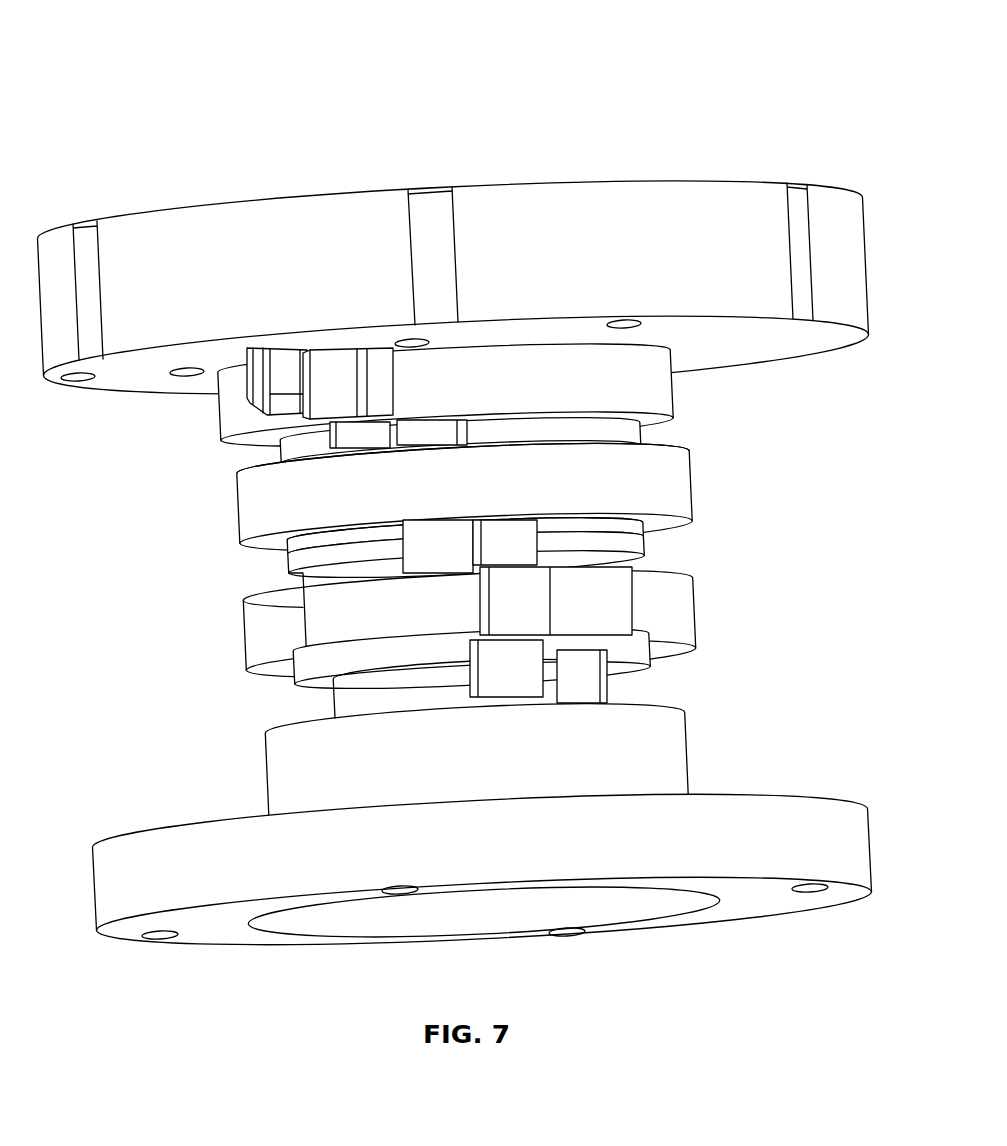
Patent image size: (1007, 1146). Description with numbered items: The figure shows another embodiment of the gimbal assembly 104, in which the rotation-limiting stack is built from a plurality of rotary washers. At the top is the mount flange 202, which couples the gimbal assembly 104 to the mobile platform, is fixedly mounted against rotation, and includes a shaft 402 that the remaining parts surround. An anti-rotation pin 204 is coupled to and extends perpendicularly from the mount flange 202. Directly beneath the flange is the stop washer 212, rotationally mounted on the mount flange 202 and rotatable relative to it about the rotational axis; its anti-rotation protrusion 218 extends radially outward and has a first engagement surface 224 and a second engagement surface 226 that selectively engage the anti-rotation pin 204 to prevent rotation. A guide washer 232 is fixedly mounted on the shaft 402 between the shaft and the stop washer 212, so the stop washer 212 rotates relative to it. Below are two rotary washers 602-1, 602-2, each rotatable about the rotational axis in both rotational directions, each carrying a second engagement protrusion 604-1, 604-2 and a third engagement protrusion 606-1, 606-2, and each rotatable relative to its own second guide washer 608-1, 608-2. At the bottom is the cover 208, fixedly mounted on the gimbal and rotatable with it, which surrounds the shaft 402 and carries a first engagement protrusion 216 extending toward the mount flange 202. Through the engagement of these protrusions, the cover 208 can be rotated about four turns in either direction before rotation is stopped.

The gimbal assembly 104 is at (482, 487).
The mount flange 202 is at (720, 195).
The anti-rotation pin 204 is at (283, 383).
The cover 208 is at (690, 758).
The stop washer 212 is at (670, 388).
The first engagement protrusion 216 is at (617, 672).
The anti-rotation protrusion 218 is at (343, 380).
The first engagement surface 224 is at (287, 368).
The second engagement surface 226 is at (380, 390).
The guide washer 232 is at (673, 447).
The shaft 402 is at (365, 680).
The rotary washer 602-1 is at (237, 634).
The rotary washer 602-2 is at (235, 513).
The second engagement protrusion 604-1 is at (480, 680).
The second engagement protrusion 604-2 is at (303, 540).
The third engagement protrusion 606-1 is at (643, 533).
The third engagement protrusion 606-2 is at (430, 433).
The second guide washer 608-1 is at (647, 654).
The second guide washer 608-2 is at (643, 540).